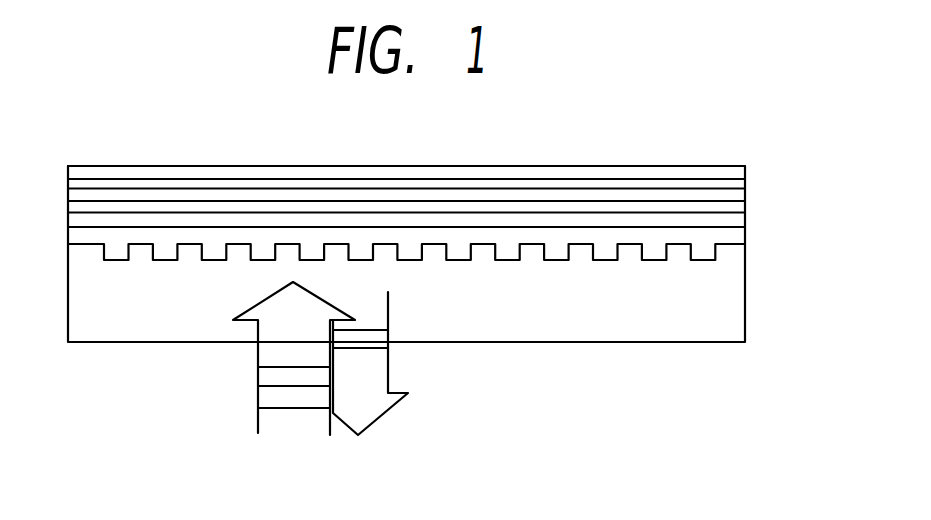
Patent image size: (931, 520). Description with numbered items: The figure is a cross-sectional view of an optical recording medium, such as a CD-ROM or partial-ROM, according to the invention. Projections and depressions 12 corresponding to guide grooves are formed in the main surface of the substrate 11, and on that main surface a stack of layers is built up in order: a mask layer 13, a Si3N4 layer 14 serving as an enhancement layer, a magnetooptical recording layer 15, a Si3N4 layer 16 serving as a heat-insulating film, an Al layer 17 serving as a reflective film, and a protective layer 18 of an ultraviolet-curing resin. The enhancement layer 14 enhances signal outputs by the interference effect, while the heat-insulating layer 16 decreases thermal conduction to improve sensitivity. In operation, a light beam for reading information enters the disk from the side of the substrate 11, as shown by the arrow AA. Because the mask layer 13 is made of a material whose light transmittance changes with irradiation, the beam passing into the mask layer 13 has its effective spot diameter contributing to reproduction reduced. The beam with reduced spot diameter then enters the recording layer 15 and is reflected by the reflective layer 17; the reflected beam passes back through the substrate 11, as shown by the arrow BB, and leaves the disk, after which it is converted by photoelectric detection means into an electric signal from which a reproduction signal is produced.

The substrate 11 is at (682, 327).
The projections and depressions 12 is at (687, 258).
The mask layer 13 is at (745, 238).
The Si3N4 layer (enhancement layer) 14 is at (745, 222).
The magnetooptical recording layer 15 is at (745, 210).
The Si3N4 layer (heat-insulating film) 16 is at (745, 195).
The Al layer (reflective film) 17 is at (745, 182).
The protective layer 18 is at (745, 168).
The arrow AA is at (270, 395).
The arrow BB is at (398, 398).